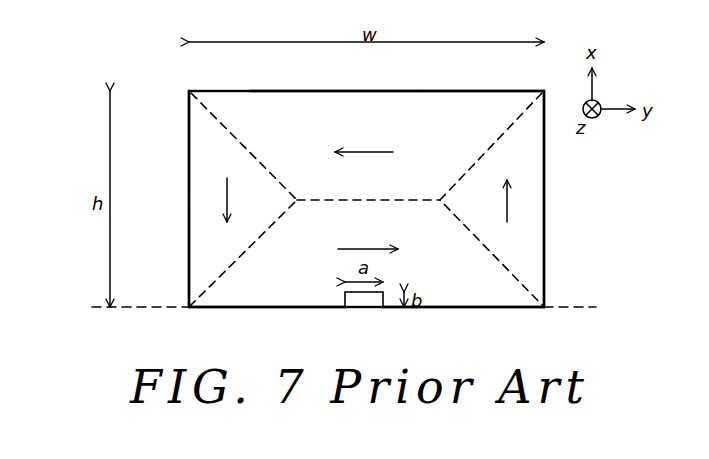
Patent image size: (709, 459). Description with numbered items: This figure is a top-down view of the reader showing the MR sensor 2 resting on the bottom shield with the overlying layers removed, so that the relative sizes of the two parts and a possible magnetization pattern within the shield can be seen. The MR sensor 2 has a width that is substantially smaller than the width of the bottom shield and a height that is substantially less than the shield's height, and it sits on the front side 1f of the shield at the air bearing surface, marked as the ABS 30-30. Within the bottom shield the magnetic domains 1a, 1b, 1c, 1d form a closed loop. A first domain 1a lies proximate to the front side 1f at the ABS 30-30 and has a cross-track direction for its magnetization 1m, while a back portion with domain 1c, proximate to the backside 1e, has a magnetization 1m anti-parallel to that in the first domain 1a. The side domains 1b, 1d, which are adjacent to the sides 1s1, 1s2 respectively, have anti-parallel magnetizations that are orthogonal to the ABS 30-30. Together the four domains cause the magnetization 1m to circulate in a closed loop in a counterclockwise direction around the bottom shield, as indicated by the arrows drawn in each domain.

The first domain 1a is at (457, 297).
The side domain 1b is at (534, 255).
The domain 1c is at (419, 108).
The side domain 1d is at (189, 262).
The backside 1e is at (334, 91).
The front side 1f is at (280, 308).
The side 1s1 is at (544, 170).
The side 1s2 is at (189, 170).
The magnetization 1m is at (368, 187).
The MR sensor 2 is at (370, 308).
The ABS 30 is at (342, 310).